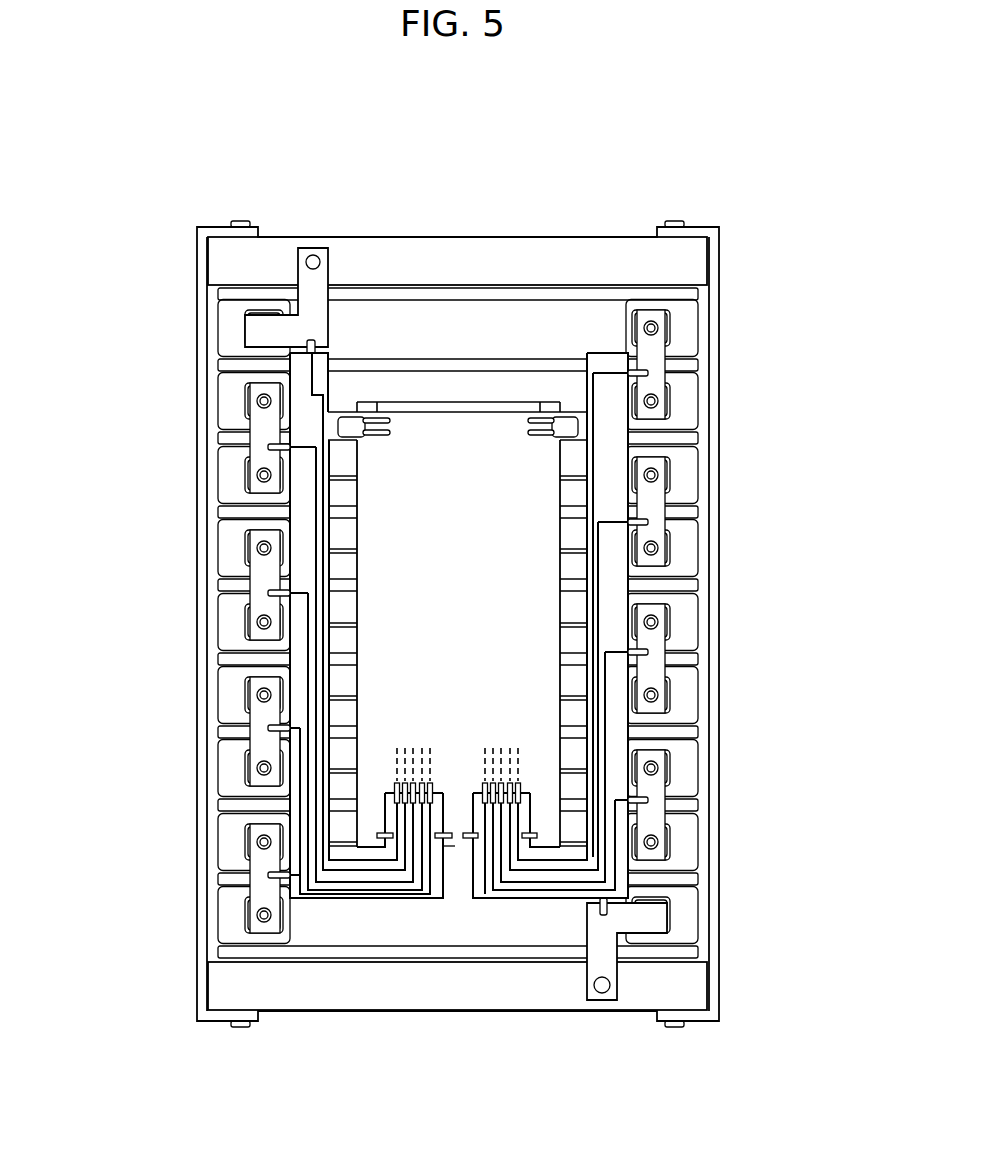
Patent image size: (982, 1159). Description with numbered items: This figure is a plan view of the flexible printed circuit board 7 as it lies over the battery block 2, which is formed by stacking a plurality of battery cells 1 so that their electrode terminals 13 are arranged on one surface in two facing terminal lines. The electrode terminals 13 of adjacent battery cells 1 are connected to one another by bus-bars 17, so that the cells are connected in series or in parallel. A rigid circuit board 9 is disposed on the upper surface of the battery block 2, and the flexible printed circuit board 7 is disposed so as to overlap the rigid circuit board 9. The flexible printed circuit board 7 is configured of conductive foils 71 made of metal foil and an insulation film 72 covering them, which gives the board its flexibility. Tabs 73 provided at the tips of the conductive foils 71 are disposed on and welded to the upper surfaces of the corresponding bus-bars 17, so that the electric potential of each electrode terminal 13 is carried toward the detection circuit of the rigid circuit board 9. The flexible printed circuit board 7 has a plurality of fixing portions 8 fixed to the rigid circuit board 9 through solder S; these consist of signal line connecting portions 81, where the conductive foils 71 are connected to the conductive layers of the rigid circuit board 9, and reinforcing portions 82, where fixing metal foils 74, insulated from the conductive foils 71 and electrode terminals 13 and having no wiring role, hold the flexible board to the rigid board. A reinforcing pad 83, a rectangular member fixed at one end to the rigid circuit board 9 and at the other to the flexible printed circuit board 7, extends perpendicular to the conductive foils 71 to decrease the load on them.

The battery cell 1 is at (230, 325).
The battery block 2 is at (712, 171).
The flexible printed circuit board 7 is at (792, 737).
The conductive foil 71 is at (620, 876).
The insulation film 72 is at (618, 722).
The tab 73 is at (650, 520).
The fixing metal foil 74 is at (564, 425).
The fixing portion 8 is at (309, 489).
The signal line connecting portion 81 is at (370, 825).
The reinforcing portion 82 is at (362, 406).
The reinforcing pad 83 is at (470, 840).
The rigid circuit board 9 is at (378, 646).
The electrode terminal 13 is at (238, 476).
The bus-bar 17 is at (658, 370).
The solder S is at (539, 415).